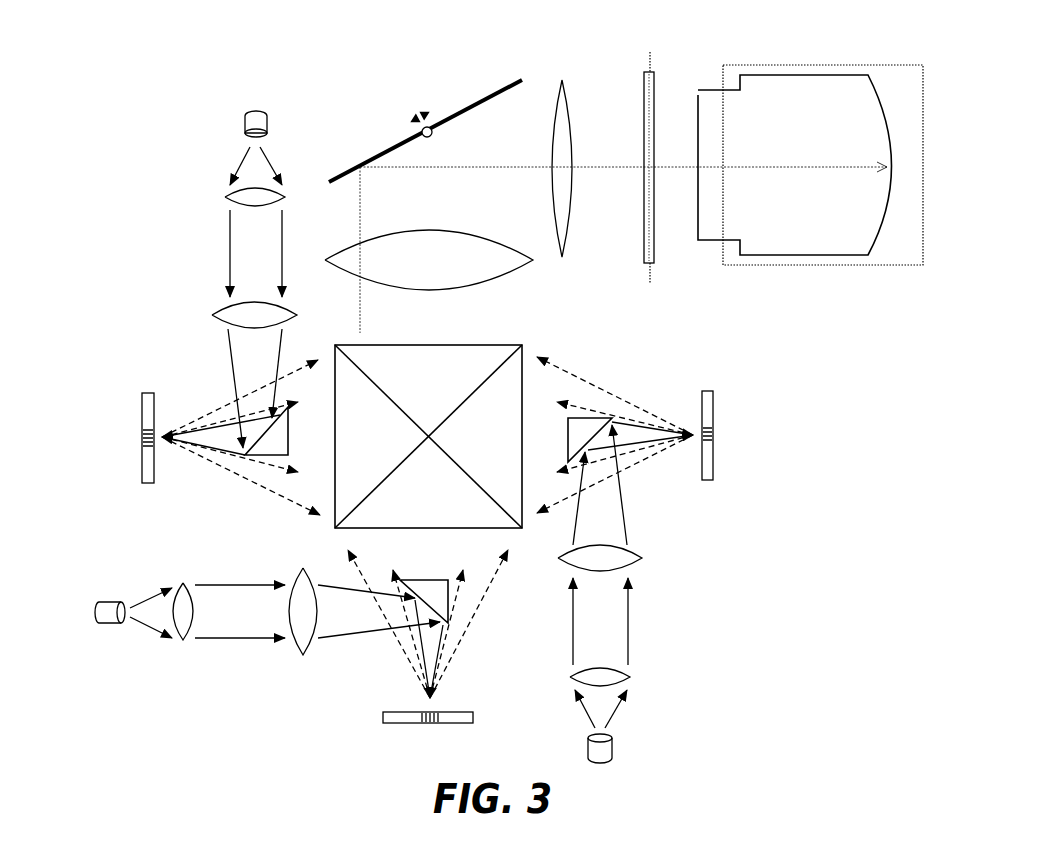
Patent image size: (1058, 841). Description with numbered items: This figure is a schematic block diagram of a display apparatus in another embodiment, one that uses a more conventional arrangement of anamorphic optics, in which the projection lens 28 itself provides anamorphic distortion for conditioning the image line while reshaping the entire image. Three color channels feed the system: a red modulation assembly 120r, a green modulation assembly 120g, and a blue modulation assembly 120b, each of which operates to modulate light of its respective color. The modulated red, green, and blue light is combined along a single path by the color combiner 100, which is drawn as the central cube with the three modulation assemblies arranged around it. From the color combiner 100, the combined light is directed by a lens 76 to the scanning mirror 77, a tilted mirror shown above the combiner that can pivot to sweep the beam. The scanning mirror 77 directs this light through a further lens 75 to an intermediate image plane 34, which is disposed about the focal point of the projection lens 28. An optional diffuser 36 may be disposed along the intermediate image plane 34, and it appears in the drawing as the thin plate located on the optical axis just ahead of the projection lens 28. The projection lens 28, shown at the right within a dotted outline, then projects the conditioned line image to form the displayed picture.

The projection lens 28 is at (820, 265).
The intermediate image plane 34 is at (653, 59).
The diffuser 36 is at (645, 88).
The lens 75 is at (560, 252).
The lens 76 is at (430, 230).
The scanning mirror 77 is at (382, 152).
The color combiner 100 is at (480, 345).
The blue modulation assembly 120b is at (168, 298).
The green modulation assembly 120g is at (253, 680).
The red modulation assembly 120r is at (716, 513).